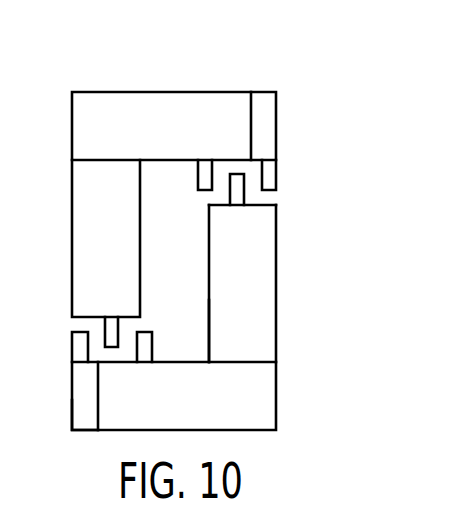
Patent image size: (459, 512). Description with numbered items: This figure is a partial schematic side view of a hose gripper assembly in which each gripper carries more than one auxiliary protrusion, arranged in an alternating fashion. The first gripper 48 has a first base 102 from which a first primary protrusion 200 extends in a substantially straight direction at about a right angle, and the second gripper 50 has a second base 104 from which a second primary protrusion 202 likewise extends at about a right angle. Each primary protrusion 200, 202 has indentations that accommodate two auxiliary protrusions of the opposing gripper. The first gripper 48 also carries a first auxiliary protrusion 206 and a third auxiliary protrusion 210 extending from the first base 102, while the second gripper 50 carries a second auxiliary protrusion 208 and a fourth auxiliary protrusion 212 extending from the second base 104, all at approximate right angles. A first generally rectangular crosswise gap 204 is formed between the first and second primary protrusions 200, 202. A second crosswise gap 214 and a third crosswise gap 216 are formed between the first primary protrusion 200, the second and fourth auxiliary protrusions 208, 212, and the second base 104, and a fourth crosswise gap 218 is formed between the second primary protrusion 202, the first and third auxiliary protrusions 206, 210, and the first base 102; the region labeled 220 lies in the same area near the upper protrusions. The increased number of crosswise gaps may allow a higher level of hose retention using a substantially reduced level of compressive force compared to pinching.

The first gripper 48 is at (210, 44).
The second gripper 50 is at (84, 448).
The first base 102 is at (135, 102).
The second base 104 is at (253, 407).
The first primary protrusion 200 is at (83, 213).
The second primary protrusion 202 is at (243, 277).
The first crosswise gap 204 is at (183, 310).
The first auxiliary protrusion 206 is at (272, 175).
The second auxiliary protrusion 208 is at (80, 353).
The third auxiliary protrusion 210 is at (200, 180).
The fourth auxiliary protrusion 212 is at (143, 333).
The second crosswise gap 214 is at (97, 343).
The third crosswise gap 216 is at (128, 342).
The fourth crosswise gap 218 is at (253, 180).
The top surface of second block 220 is at (221, 194).